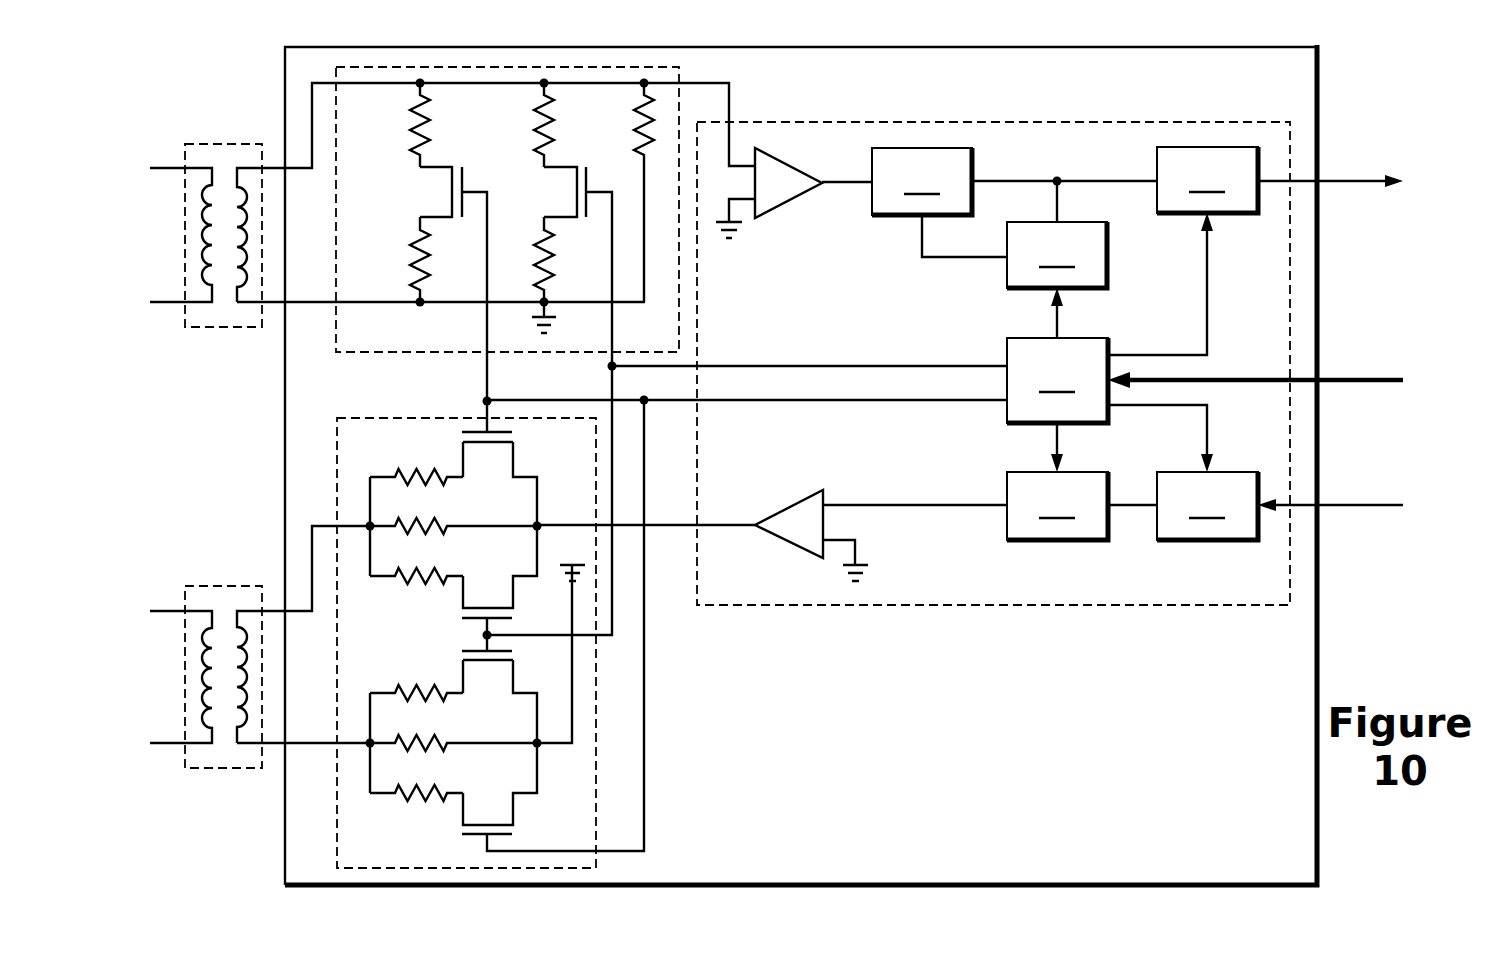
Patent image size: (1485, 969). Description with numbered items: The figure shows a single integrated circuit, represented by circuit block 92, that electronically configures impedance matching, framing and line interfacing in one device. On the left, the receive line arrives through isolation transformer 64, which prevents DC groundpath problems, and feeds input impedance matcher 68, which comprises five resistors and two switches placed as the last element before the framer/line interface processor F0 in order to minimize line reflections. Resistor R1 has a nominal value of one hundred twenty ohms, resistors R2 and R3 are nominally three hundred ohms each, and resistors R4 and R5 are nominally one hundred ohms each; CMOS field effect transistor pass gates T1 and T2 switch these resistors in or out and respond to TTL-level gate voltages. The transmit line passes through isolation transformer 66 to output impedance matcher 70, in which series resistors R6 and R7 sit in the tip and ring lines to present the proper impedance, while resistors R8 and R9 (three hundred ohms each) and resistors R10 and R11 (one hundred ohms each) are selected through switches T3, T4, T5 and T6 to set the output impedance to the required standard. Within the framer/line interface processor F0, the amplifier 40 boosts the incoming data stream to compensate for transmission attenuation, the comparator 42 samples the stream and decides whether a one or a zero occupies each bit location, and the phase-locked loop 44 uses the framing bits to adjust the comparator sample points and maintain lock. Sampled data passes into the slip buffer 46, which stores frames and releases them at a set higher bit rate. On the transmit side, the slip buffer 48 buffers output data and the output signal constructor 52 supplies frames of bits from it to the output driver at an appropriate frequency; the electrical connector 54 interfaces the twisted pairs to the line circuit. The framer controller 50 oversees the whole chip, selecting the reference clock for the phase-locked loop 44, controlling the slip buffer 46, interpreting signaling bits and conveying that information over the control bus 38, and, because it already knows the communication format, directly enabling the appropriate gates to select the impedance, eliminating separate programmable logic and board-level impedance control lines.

The circuit block 92 is at (1320, 78).
The isolation transformer 64 is at (238, 143).
The isolation transformer 66 is at (238, 586).
The input impedance matcher 68 is at (360, 352).
The output impedance matcher 70 is at (423, 418).
The framer/line interface processor F0 is at (1232, 122).
The amplifier 40 is at (790, 201).
The comparator 42 is at (1014, 202).
The phase-locked loop 44 is at (1057, 233).
The slip buffer 46 is at (1280, 180).
The slip buffer 48 is at (1280, 506).
The framer controller 50 is at (1110, 342).
The output signal constructor 52 is at (990, 506).
The electrical connector 54 is at (787, 505).
The control bus 38 is at (1348, 364).
The resistor R1 is at (626, 192).
The resistor R2 is at (525, 125).
The resistor R3 is at (526, 275).
The resistor R4 is at (399, 125).
The resistor R5 is at (399, 259).
The series resistor R6 is at (453, 512).
The series resistor R7 is at (477, 658).
The resistor R8 is at (416, 562).
The resistor R9 is at (416, 678).
The resistor R10 is at (416, 462).
The resistor R11 is at (416, 778).
The CMOS field effect transistor pass gate T1 is at (549, 401).
The CMOS field effect transistor pass gate T2 is at (443, 284).
The pass gate switch T3 is at (499, 580).
The pass gate switch T4 is at (499, 689).
The pass gate switch T5 is at (499, 463).
The pass gate switch T6 is at (553, 625).